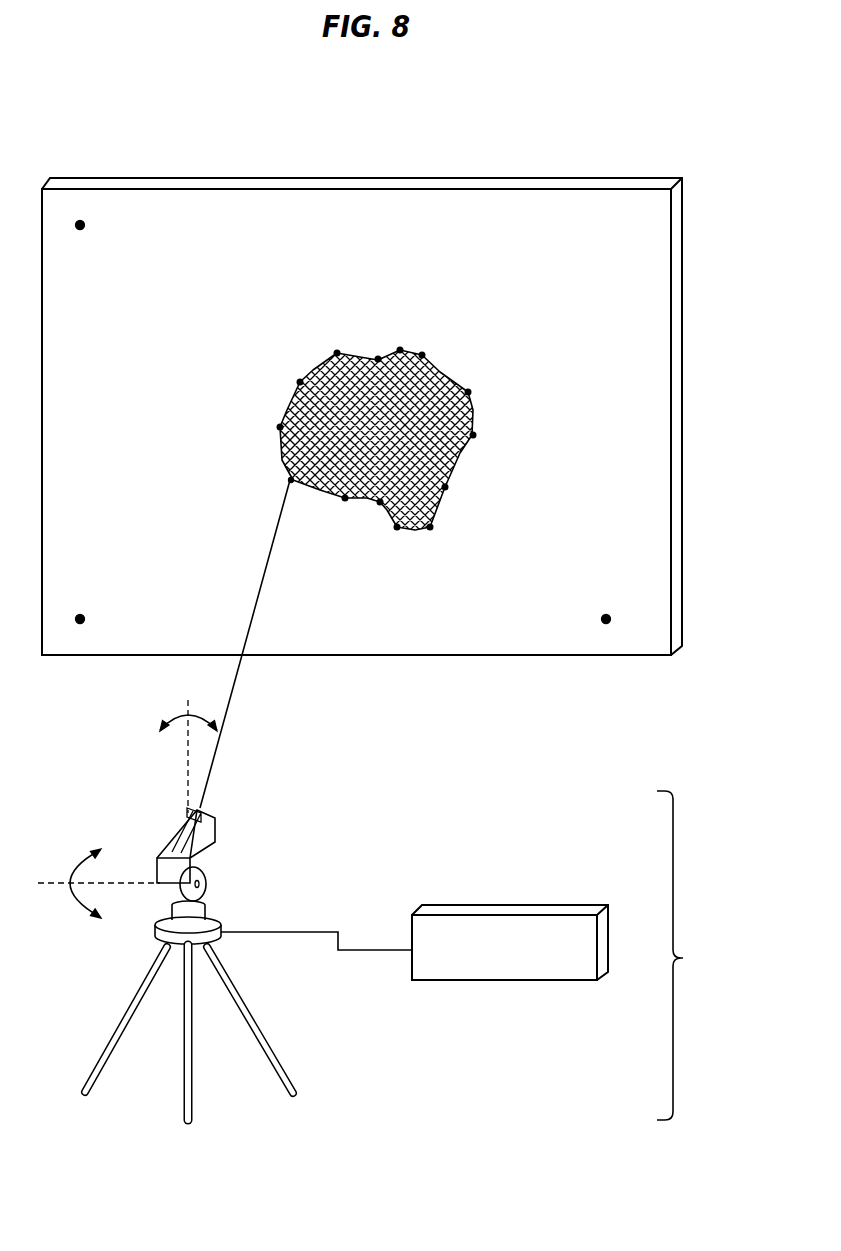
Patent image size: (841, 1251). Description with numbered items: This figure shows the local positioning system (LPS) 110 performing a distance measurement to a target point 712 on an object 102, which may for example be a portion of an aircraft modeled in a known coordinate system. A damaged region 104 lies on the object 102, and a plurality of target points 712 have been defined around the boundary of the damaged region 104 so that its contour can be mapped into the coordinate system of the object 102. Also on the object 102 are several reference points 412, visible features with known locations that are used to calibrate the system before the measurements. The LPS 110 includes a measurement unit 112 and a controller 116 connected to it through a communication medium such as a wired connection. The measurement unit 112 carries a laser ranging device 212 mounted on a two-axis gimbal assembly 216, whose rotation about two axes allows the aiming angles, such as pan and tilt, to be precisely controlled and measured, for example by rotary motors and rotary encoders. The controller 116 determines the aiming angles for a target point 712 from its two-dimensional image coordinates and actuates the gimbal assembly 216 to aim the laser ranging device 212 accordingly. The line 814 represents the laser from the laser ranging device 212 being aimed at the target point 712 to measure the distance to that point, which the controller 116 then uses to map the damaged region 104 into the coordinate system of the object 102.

The object 102 is at (382, 185).
The reference points 412 is at (80, 229).
The damaged region 104 is at (454, 361).
The target points 712 is at (290, 480).
The line 814 is at (270, 588).
The laser ranging device 212 is at (216, 822).
The two-axis gimbal assembly 216 is at (146, 918).
The measurement unit 112 is at (270, 960).
The controller 116 is at (540, 910).
The local positioning system 110 is at (691, 955).